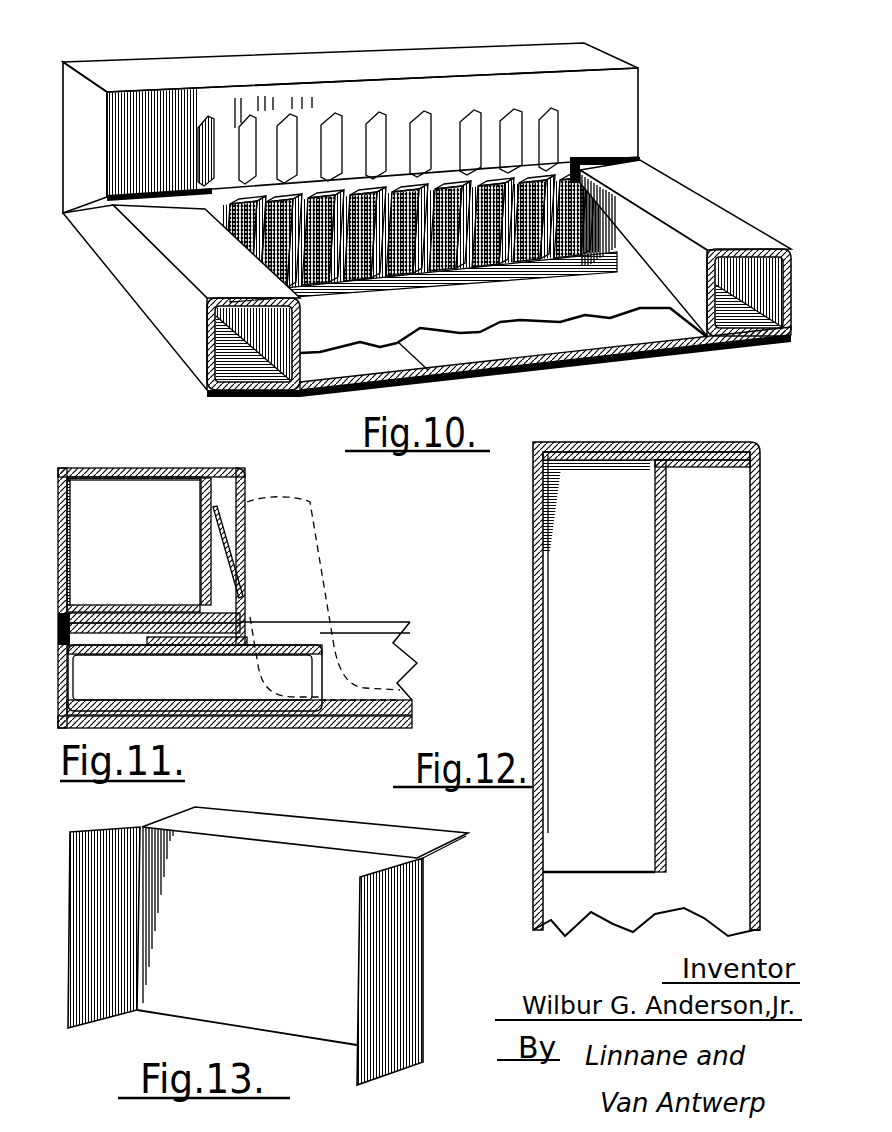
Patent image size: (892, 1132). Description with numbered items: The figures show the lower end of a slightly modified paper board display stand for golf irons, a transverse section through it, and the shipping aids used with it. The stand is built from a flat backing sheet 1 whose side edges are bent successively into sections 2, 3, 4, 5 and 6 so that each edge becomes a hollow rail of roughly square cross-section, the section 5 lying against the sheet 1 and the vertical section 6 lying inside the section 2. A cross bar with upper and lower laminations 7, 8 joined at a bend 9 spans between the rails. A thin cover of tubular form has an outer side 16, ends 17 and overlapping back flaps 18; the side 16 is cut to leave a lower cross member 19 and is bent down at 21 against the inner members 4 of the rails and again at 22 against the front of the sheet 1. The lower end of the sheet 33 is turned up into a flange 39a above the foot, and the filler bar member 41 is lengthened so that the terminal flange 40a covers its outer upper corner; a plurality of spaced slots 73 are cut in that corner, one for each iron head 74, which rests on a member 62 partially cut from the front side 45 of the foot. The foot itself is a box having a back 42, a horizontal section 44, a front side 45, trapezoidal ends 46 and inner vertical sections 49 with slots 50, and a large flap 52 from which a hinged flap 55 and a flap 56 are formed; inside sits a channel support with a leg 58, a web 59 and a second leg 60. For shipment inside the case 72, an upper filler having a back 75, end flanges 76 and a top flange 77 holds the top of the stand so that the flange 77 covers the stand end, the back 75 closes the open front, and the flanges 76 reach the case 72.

In FIG. 10, the backing sheet 1 is at (517, 347).
In FIG. 11, the backing sheet 1 is at (363, 730).
In FIG. 10, the right-angle side section 2 is at (207, 349).
In FIG. 10, the outer face of side rail 3 is at (239, 297).
In FIG. 10, the inner member of side rail 4 is at (297, 323).
In FIG. 10, the rail bottom section 5 is at (255, 400).
In FIG. 10, the terminal vertical section 6 is at (205, 373).
In FIG. 11, the upper lamination of cross bar 7 is at (113, 636).
In FIG. 11, the lower lamination of cross bar 8 is at (83, 605).
In FIG. 11, the bend of cross bar 9 is at (248, 623).
In FIG. 10, the outer side of cover 16 is at (203, 274).
In FIG. 10, the cover end 17 is at (137, 274).
In FIG. 12, the cover end 17 is at (700, 841).
In FIG. 10, the back flap 18 is at (679, 357).
In FIG. 11, the back flap 18 is at (390, 723).
In FIG. 11, the lower cross member 19 is at (217, 603).
In FIG. 10, the bent cover section 21 is at (637, 240).
In FIG. 10, the right-angle bent section 22 is at (614, 330).
In FIG. 10, the sheet 33 is at (473, 314).
In FIG. 10, the flange 39a is at (481, 236).
In FIG. 10, the terminal flange 40a is at (455, 198).
In FIG. 11, the terminal flange 40a is at (180, 654).
In FIG. 11, the filler bar member 41 is at (63, 727).
In FIG. 11, the back of foot member 42 is at (60, 537).
In FIG. 10, the horizontal bottom section 44 is at (330, 62).
In FIG. 11, the horizontal bottom section 44 is at (127, 468).
In FIG. 10, the front side of foot member 45 is at (621, 96).
In FIG. 11, the front side of foot member 45 is at (245, 480).
In FIG. 10, the end of foot member 46 is at (79, 125).
In FIG. 11, the vertical inner section 49 is at (173, 502).
In FIG. 11, the slot 50 is at (200, 583).
In FIG. 11, the flap 52 is at (67, 567).
In FIG. 11, the hinged flap 55 is at (167, 648).
In FIG. 11, the flap 56 is at (63, 685).
In FIG. 11, the leg of channel support 58 is at (147, 605).
In FIG. 11, the web of channel support 59 is at (203, 502).
In FIG. 11, the second leg of channel support 60 is at (115, 481).
In FIG. 10, the partially cut member 62 is at (284, 116).
In FIG. 11, the partially cut member 62 is at (230, 545).
In FIG. 12, the shipping case 72 is at (534, 634).
In FIG. 10, the slot 73 is at (410, 256).
In FIG. 11, the slot 73 is at (320, 650).
In FIG. 11, the iron head 74 is at (333, 553).
In FIG. 12, the back of filler 75 is at (666, 668).
In FIG. 13, the back of filler 75 is at (303, 1018).
In FIG. 12, the end flange 76 is at (585, 859).
In FIG. 13, the end flange 76 is at (103, 1000).
In FIG. 12, the top flange 77 is at (708, 466).
In FIG. 13, the top flange 77 is at (427, 832).